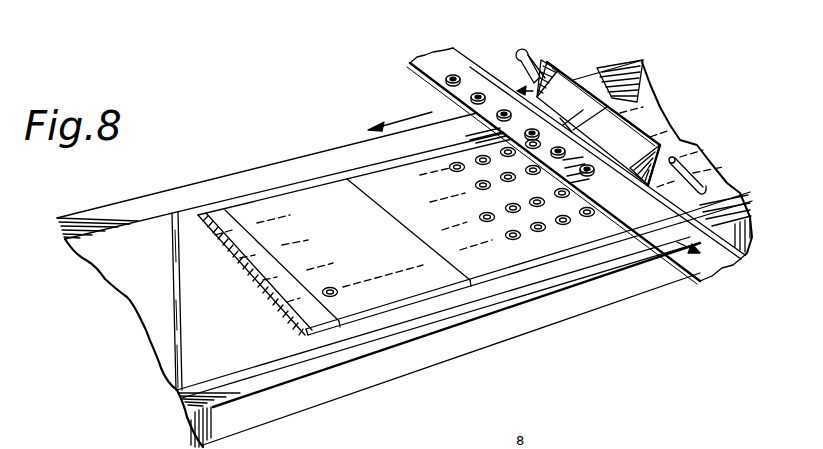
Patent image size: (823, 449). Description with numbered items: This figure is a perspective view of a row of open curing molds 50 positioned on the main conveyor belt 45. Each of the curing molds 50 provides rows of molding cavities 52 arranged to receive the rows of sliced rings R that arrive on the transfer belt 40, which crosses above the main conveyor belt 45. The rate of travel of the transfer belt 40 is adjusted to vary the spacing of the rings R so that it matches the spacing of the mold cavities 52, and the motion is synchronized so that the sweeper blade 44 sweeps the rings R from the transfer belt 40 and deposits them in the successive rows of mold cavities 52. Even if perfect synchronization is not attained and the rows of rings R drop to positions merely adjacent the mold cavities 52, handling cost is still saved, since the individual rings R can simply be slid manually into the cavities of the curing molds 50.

The transfer belt 40 is at (450, 64).
The rings R is at (460, 75).
The sweeper blade 44 is at (553, 81).
The main conveyor belt 45 is at (143, 237).
The curing molds 50 is at (317, 331).
The mold cavities 52 is at (588, 217).